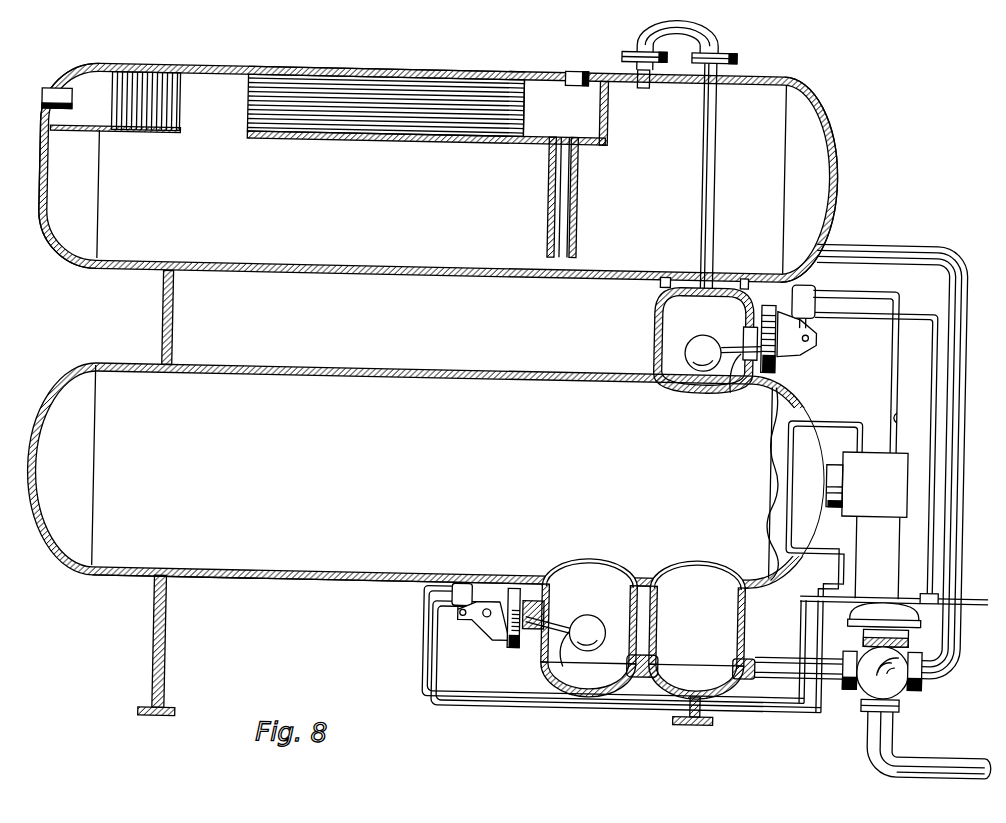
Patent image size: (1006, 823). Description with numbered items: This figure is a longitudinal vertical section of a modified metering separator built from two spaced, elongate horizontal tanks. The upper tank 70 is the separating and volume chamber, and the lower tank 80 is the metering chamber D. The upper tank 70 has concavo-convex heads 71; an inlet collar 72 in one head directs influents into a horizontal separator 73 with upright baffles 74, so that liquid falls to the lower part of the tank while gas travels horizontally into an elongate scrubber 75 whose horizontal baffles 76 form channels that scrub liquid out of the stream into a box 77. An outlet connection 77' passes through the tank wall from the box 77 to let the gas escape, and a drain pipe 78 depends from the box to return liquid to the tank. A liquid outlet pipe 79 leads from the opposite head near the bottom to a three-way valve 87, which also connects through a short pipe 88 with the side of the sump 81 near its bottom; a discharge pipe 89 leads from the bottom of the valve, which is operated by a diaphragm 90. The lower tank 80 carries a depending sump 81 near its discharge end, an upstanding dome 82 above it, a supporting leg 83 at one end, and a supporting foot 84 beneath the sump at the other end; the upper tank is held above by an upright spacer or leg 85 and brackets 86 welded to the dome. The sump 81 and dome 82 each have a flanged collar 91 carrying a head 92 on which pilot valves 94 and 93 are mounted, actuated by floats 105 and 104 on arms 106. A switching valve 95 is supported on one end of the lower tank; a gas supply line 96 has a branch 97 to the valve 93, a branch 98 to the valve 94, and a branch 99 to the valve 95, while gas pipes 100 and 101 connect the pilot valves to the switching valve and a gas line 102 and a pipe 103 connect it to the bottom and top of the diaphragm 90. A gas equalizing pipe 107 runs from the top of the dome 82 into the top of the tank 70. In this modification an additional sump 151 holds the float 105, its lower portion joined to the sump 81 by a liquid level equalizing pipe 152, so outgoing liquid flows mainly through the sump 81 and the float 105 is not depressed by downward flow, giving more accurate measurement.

The upper tank 70 is at (222, 61).
The heads 71 is at (42, 183).
The inlet collar 72 is at (43, 98).
The horizontal separator 73 is at (94, 130).
The upright baffles 74 is at (183, 114).
The horizontal scrubber 75 is at (332, 133).
The horizontal baffles 76 is at (396, 62).
The box 77 is at (578, 113).
The outlet connection 77' is at (560, 61).
The drain pipe 78 is at (552, 201).
The liquid outlet pipe 79 is at (904, 227).
The lower tank 80 is at (468, 361).
The sump 81 is at (722, 533).
The dome 82 is at (663, 309).
The supporting leg 83 is at (180, 633).
The supporting foot 84 is at (700, 712).
The spacer or leg 85 is at (182, 306).
The brackets 86 is at (665, 278).
The three-way valve 87 is at (872, 682).
The short pipe 88 is at (781, 646).
The outlet or discharge pipe 89 is at (962, 716).
The diaphragm 90 is at (918, 618).
The flanged collar 91 is at (553, 589).
The head 92 is at (802, 336).
The pilot valve 93 is at (821, 270).
The pilot valve 94 is at (492, 546).
The relay or switching valve 95 is at (890, 446).
The gas supply line 96 is at (981, 581).
The branch 97 is at (922, 300).
The branch 98 is at (902, 584).
The branch 99 is at (903, 400).
The gas pipe 100 is at (898, 344).
The gas pipe 101 is at (860, 406).
The gas line 102 is at (866, 541).
The pipe 103 is at (909, 558).
The float 104 is at (720, 357).
The float 105 is at (632, 590).
The arms 106 is at (738, 377).
The gas equalizing pipe 107 is at (718, 158).
The additional sump 151 is at (593, 555).
The liquid level equalizing pipe 152 is at (675, 642).
The metering chamber D is at (309, 574).